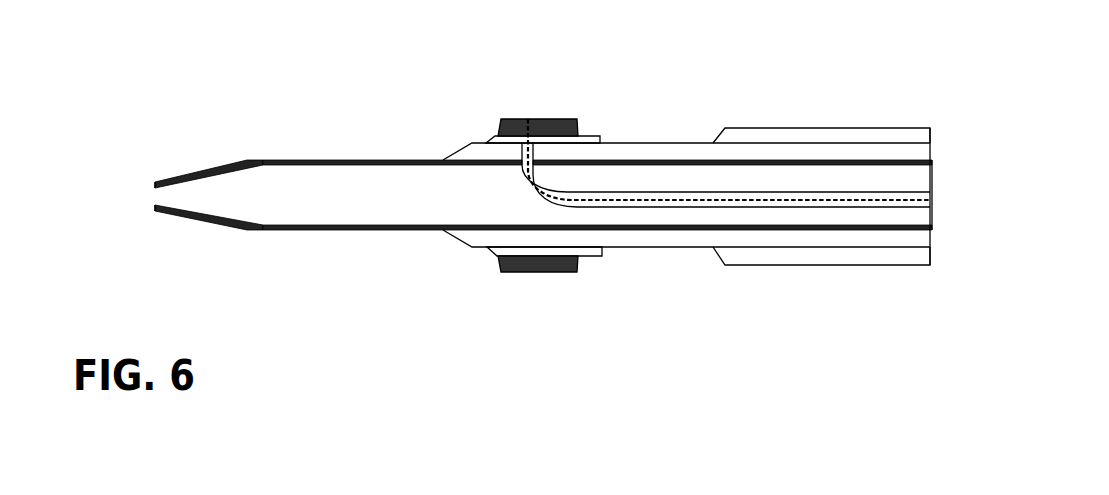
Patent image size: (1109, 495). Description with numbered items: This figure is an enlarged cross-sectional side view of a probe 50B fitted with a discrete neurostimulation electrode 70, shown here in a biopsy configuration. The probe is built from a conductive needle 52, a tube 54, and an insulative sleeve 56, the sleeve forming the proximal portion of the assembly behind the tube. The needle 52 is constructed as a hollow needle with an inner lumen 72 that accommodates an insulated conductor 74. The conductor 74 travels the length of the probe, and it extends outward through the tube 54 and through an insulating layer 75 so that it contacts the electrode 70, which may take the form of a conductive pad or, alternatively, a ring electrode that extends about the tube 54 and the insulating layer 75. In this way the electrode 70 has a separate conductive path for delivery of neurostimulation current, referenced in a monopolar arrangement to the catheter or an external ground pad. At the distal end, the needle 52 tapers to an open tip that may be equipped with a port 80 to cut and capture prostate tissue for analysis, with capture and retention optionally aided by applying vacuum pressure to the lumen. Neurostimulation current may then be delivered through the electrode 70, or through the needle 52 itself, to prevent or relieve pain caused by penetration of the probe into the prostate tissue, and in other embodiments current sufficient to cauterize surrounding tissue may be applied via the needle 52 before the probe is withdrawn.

The ablation probe 50B is at (396, 62).
The needle 52 is at (247, 160).
The tube 54 is at (620, 143).
The insulative sleeve 56 is at (772, 128).
The electrode 70 is at (527, 119).
The inner lumen 72 is at (365, 197).
The insulated conductor 74 is at (678, 204).
The insulating layer 75 is at (486, 143).
The port 80 is at (137, 197).